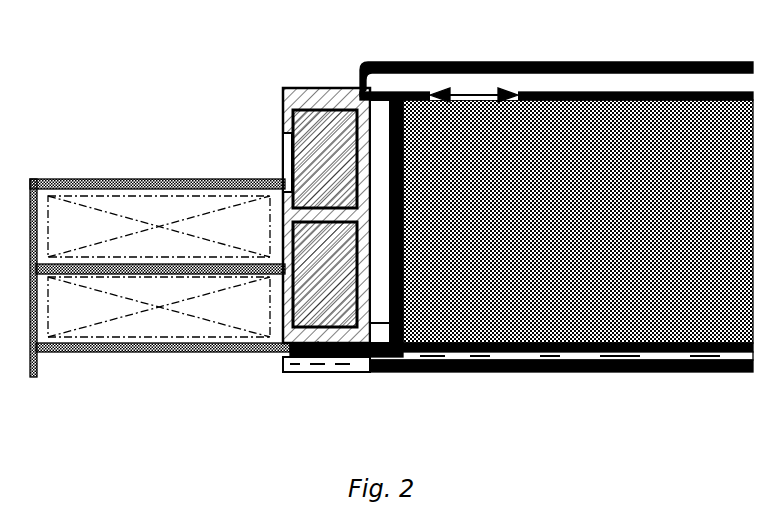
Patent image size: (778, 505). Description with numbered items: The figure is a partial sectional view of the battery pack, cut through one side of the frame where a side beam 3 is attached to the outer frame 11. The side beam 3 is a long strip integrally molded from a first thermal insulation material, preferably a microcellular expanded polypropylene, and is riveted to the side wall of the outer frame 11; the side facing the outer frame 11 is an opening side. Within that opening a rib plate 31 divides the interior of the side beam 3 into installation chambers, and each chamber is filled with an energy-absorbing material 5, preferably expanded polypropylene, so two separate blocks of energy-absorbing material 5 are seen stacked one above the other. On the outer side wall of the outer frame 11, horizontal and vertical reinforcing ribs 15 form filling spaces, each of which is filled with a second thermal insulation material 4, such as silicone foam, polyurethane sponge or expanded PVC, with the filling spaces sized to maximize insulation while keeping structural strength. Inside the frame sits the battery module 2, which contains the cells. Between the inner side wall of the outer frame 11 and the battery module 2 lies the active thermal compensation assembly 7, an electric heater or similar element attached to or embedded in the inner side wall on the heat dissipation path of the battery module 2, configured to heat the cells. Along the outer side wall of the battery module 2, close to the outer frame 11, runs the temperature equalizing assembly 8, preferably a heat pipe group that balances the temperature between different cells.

The battery module 2 is at (675, 120).
The side beam 3 is at (53, 187).
The second thermal insulation material 4 is at (305, 293).
The energy-absorbing material 5 is at (128, 210).
The thermal compensation assembly 7 is at (375, 128).
The temperature equalizing assembly 8 is at (387, 347).
The outer frame 11 is at (314, 97).
The reinforcing rib 15 is at (279, 186).
The rib plate 31 is at (117, 266).